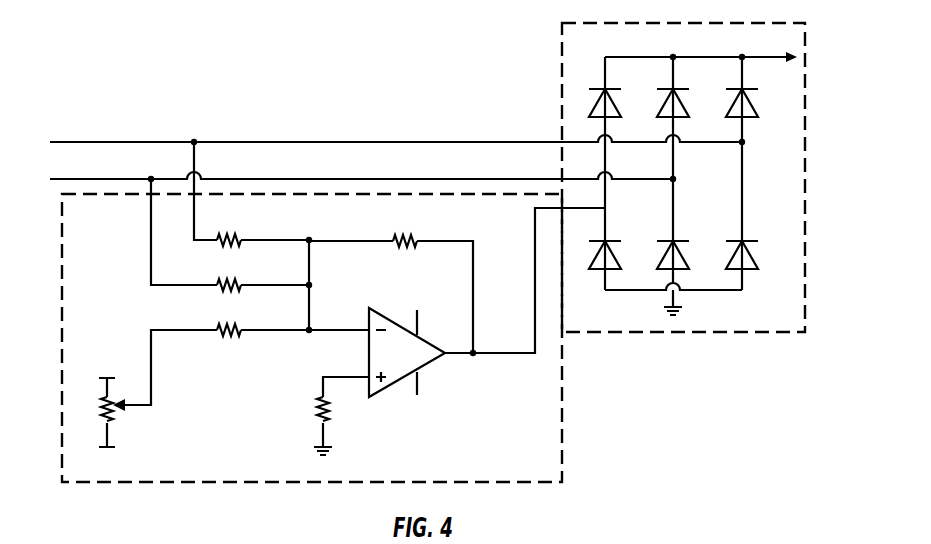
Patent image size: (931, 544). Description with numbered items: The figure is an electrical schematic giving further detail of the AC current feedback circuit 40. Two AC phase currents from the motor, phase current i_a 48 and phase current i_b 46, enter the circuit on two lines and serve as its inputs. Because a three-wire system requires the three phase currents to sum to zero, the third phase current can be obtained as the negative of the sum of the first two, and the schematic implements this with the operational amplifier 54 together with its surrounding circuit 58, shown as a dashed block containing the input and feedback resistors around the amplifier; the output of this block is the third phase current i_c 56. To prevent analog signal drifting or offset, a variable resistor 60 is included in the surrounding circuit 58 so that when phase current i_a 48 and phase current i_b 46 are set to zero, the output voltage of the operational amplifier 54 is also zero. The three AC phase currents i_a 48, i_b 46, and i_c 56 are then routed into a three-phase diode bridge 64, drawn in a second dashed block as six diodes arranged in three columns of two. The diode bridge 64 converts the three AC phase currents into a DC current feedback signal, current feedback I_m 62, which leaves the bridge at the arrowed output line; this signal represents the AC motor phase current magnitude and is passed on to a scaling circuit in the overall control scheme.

The AC current feedback circuit 40 is at (369, 64).
The phase current i_b 46 is at (133, 178).
The phase current i_a 48 is at (133, 141).
The operational amplifier Amp 1 54 is at (434, 354).
The third phase current i_c 56 is at (500, 355).
The surrounding circuit 58 is at (140, 483).
The variable resistor R6 60 is at (112, 418).
The current feedback I_m 62 is at (752, 60).
The three-phase diode bridge D1-D6 64 is at (559, 58).